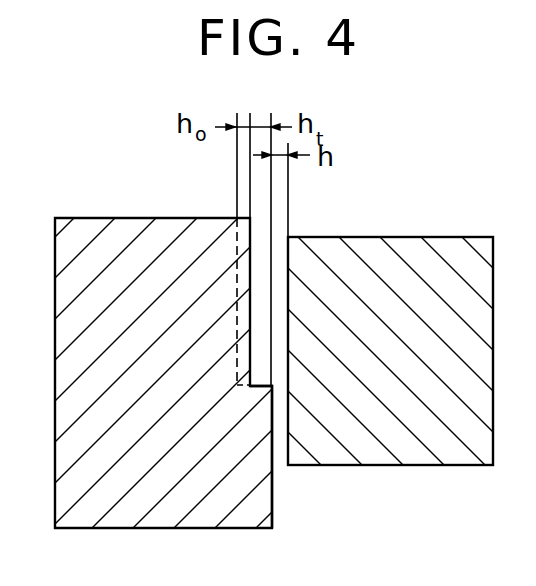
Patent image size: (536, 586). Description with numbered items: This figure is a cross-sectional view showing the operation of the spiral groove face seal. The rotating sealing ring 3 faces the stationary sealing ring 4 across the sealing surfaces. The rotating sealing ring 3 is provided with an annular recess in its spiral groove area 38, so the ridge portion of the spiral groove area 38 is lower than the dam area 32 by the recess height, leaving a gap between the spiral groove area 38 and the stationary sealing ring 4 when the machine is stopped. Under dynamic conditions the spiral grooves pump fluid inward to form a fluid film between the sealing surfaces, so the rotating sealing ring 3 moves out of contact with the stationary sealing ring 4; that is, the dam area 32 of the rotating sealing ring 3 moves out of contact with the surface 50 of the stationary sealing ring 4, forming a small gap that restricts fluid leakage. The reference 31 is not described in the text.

The rotating sealing ring 3 is at (92, 233).
The stationary sealing ring 4 is at (448, 258).
The thin layer 31 is at (272, 248).
The spiral groove area 38 is at (272, 305).
The surface of the stationary sealing ring 50 is at (287, 428).
The dam area 32 is at (272, 408).